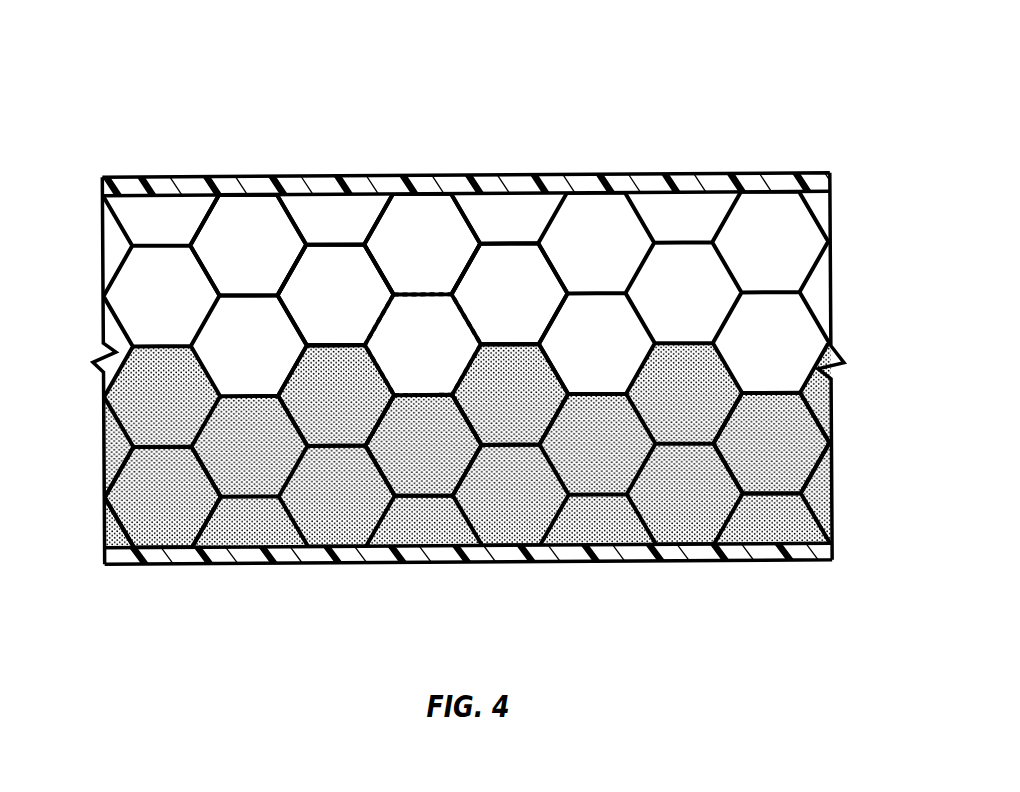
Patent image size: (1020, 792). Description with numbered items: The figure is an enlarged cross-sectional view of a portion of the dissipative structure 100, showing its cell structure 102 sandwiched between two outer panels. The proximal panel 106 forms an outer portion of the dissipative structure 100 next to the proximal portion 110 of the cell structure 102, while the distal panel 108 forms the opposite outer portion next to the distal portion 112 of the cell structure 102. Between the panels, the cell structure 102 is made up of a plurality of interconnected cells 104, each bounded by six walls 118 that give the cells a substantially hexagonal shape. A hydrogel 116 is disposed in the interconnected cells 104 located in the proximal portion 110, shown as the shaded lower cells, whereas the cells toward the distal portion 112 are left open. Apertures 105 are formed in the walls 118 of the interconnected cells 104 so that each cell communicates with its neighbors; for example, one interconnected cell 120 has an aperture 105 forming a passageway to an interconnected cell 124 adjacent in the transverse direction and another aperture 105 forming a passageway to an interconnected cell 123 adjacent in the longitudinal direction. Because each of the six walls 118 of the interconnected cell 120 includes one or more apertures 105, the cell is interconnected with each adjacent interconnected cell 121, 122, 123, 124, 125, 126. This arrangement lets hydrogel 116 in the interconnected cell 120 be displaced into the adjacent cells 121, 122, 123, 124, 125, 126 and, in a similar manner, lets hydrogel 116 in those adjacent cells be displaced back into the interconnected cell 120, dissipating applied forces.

The dissipative structure 100 is at (223, 73).
The cell structure 102 is at (712, 238).
The interconnected cells 104 is at (192, 447).
The apertures 105 is at (380, 364).
The proximal panel 106 is at (685, 562).
The distal panel 108 is at (688, 175).
The proximal portion of the cell structure 110 is at (143, 525).
The distal portion of the cell structure 112 is at (230, 235).
The hydrogel 116 is at (780, 468).
The walls 118 is at (379, 368).
The interconnected cell 120 is at (422, 323).
The adjacent interconnected cell 121 is at (412, 240).
The adjacent interconnected cell 122 is at (513, 265).
The adjacent interconnected cell 123 is at (525, 378).
The adjacent interconnected cell 124 is at (445, 458).
The adjacent interconnected cell 125 is at (333, 420).
The adjacent interconnected cell 126 is at (320, 288).